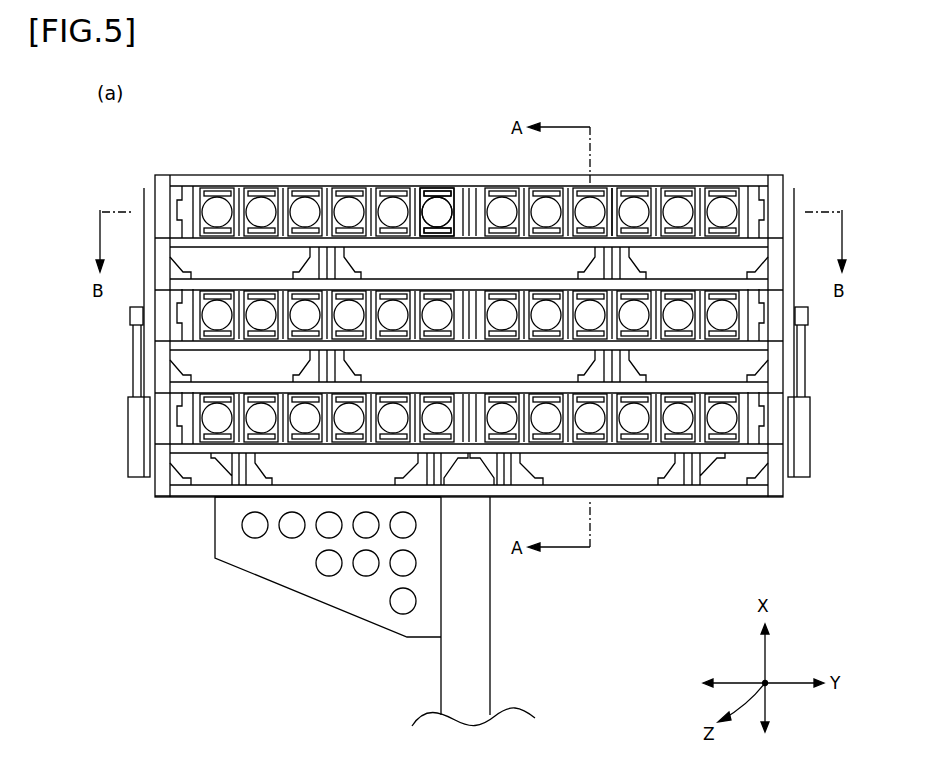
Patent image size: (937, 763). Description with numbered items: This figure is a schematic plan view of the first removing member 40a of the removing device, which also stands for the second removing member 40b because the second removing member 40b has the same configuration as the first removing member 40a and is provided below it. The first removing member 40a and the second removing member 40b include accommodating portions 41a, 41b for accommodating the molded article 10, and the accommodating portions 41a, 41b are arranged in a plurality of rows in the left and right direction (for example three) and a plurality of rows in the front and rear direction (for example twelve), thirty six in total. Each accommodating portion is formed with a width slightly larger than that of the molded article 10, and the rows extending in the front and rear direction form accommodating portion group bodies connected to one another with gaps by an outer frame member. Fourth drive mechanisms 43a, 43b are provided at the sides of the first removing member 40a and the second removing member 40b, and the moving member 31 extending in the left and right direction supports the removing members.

The molded article 10 is at (433, 205).
The accommodating portion 41a is at (612, 186).
The accommodating portion 41b is at (652, 164).
The first removing member 40a is at (752, 176).
The second removing member 40b is at (488, 304).
The fourth drive mechanism 43a is at (802, 468).
The fourth drive mechanism 43b is at (817, 490).
The moving member 31 is at (492, 628).